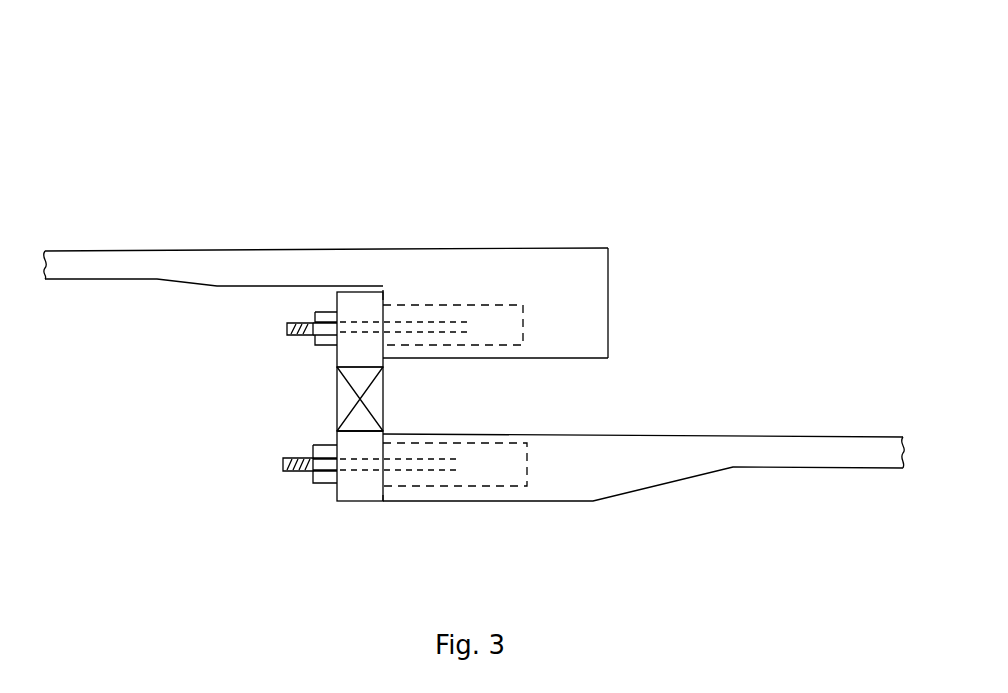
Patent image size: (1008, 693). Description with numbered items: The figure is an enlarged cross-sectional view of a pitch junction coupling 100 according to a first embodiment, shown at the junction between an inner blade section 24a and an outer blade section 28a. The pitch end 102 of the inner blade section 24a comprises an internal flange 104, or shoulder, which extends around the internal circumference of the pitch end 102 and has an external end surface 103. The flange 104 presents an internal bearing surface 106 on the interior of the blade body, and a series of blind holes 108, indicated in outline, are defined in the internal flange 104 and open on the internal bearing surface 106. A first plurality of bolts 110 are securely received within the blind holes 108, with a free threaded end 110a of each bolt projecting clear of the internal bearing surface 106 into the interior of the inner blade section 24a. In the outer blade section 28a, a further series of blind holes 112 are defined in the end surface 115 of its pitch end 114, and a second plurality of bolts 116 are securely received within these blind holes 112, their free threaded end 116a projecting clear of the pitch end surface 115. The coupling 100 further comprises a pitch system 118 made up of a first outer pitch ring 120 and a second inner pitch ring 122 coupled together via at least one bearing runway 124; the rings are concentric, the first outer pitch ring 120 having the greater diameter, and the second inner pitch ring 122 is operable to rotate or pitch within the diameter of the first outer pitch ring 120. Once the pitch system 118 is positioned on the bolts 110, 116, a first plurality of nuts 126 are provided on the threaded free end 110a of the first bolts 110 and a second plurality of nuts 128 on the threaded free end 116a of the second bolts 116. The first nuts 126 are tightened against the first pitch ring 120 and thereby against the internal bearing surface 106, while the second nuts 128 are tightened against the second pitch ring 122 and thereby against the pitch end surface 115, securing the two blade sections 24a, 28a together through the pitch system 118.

The pitch junction coupling 100 is at (344, 125).
The inner blade section 24a is at (277, 265).
The outer blade section 28a is at (640, 465).
The pitch end 102 is at (630, 268).
The external end surface 103 is at (608, 313).
The internal flange 104 is at (499, 356).
The internal bearing surface 106 is at (386, 296).
The blind holes 108 is at (460, 313).
The first plurality of bolts 110 is at (423, 333).
The free threaded end 110a is at (290, 325).
The blind holes 112 is at (498, 475).
The pitch end 114 is at (358, 535).
The end surface 115 is at (384, 495).
The second plurality of bolts 116 is at (417, 462).
The free threaded end 116a is at (287, 458).
The pitch system 118 is at (172, 514).
The first outer pitch ring 120 is at (347, 355).
The second inner pitch ring 122 is at (345, 498).
The bearing runway 124 is at (347, 397).
The first plurality of nuts 126 is at (317, 343).
The second plurality of nuts 128 is at (327, 487).